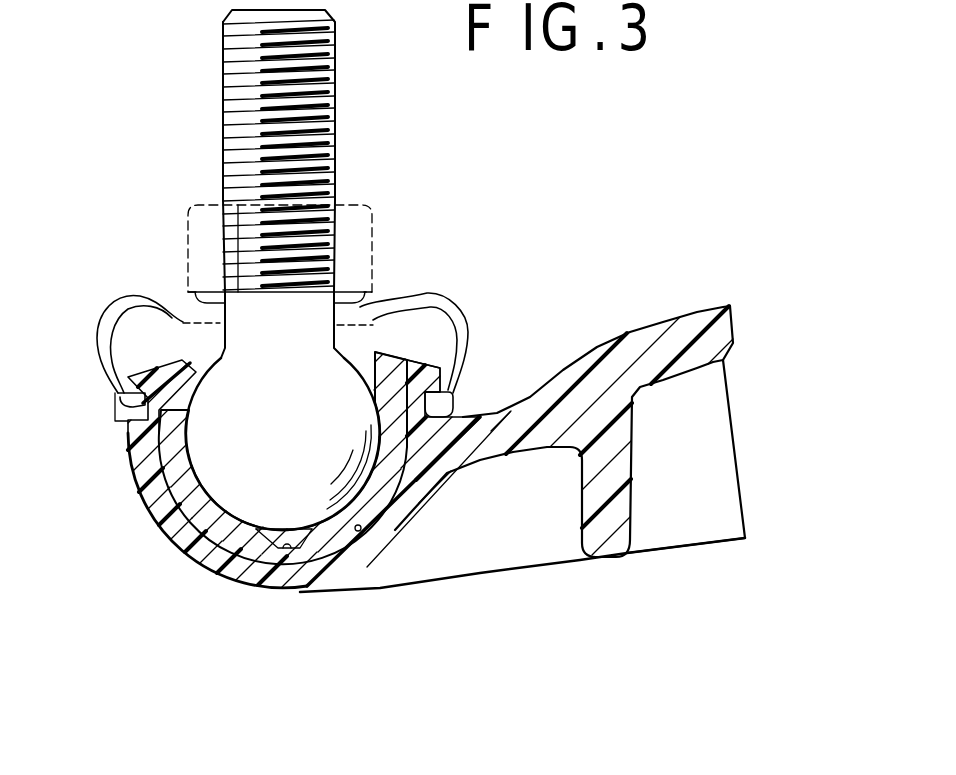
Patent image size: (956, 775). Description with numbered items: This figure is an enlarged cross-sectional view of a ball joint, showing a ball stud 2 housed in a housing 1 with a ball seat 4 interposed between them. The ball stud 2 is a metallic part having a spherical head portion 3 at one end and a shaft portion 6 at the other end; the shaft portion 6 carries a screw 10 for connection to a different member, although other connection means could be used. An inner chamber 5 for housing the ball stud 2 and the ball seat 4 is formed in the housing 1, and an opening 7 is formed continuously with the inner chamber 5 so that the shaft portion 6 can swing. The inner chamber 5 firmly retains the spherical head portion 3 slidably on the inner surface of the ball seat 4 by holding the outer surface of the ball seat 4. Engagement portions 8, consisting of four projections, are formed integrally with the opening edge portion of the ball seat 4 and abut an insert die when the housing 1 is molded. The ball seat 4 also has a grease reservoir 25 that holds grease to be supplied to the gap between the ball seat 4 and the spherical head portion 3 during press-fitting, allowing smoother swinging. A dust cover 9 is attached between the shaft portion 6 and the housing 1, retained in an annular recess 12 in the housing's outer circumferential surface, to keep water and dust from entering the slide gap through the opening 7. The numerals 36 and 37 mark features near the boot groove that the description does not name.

The housing 1 is at (633, 342).
The ball stud 2 is at (296, 272).
The spherical head portion 3 is at (207, 463).
The ball seat 4 is at (210, 520).
The inner chamber 5 is at (359, 532).
The shaft portion 6 is at (222, 147).
The opening 7 is at (190, 357).
The engagement portion 8 is at (397, 363).
The dust cover 9 is at (463, 305).
The screw 10 is at (336, 67).
The annular recess 12 is at (120, 394).
The grease reservoir 25 is at (281, 549).
The right annular groove 36 is at (440, 416).
The left annular groove 37 is at (120, 411).